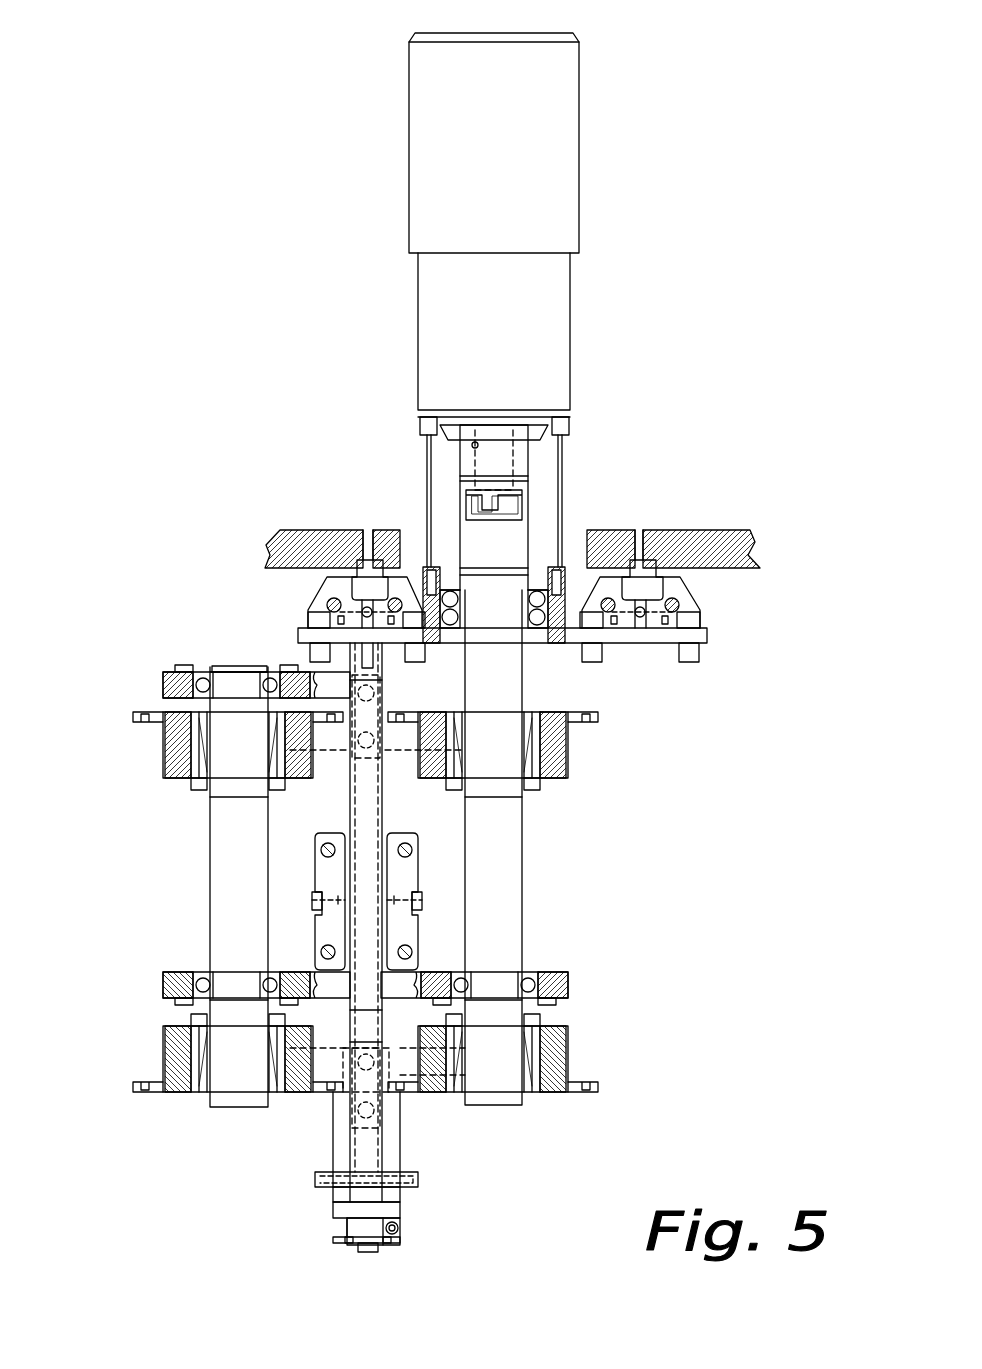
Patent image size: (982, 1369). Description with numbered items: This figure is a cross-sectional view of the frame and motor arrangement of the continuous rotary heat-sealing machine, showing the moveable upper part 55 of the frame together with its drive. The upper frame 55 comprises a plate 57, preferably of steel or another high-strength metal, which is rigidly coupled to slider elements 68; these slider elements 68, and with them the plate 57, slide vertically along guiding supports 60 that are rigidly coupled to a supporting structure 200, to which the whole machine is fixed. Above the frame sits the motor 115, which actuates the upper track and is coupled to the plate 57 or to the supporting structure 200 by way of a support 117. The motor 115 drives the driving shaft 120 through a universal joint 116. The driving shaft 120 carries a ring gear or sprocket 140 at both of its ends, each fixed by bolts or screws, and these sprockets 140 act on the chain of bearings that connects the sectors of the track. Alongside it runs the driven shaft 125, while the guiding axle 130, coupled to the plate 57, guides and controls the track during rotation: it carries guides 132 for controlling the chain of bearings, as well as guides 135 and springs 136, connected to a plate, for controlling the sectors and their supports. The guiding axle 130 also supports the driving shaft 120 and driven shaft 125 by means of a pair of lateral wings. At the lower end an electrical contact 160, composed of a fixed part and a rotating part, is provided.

The motor 115 is at (527, 139).
The universal joint 116 is at (490, 478).
The support 117 is at (559, 503).
The supporting structure 200 is at (707, 548).
The guiding support 60 is at (365, 592).
The slider element 68 is at (352, 612).
The moveable upper part of the frame 55 is at (716, 621).
The plate 57 is at (650, 637).
The driving shaft 120 is at (496, 1055).
The driven shaft 125 is at (240, 726).
The ring gear or sprocket 140 is at (176, 751).
The guiding axle 130 is at (366, 1146).
The guide 132 is at (348, 700).
The spring 136 is at (327, 851).
The guide 135 is at (318, 900).
The electrical contact 160 is at (410, 1230).